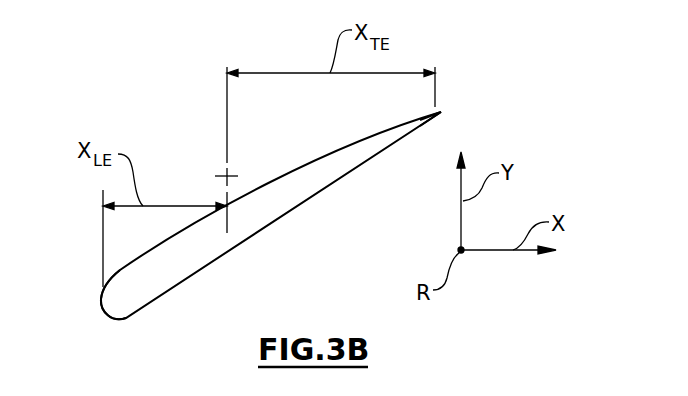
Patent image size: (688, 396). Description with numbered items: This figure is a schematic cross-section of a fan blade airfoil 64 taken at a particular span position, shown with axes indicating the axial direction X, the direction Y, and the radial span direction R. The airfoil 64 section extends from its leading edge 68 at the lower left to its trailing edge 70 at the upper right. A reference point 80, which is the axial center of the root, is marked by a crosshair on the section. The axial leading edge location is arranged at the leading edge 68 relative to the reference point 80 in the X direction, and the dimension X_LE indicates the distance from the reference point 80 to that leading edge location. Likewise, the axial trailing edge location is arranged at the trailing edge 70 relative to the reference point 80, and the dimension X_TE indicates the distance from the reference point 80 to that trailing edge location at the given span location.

The airfoil 64 is at (252, 175).
The leading edge 68 is at (102, 308).
The trailing edge 70 is at (441, 112).
The reference point 80 is at (222, 173).